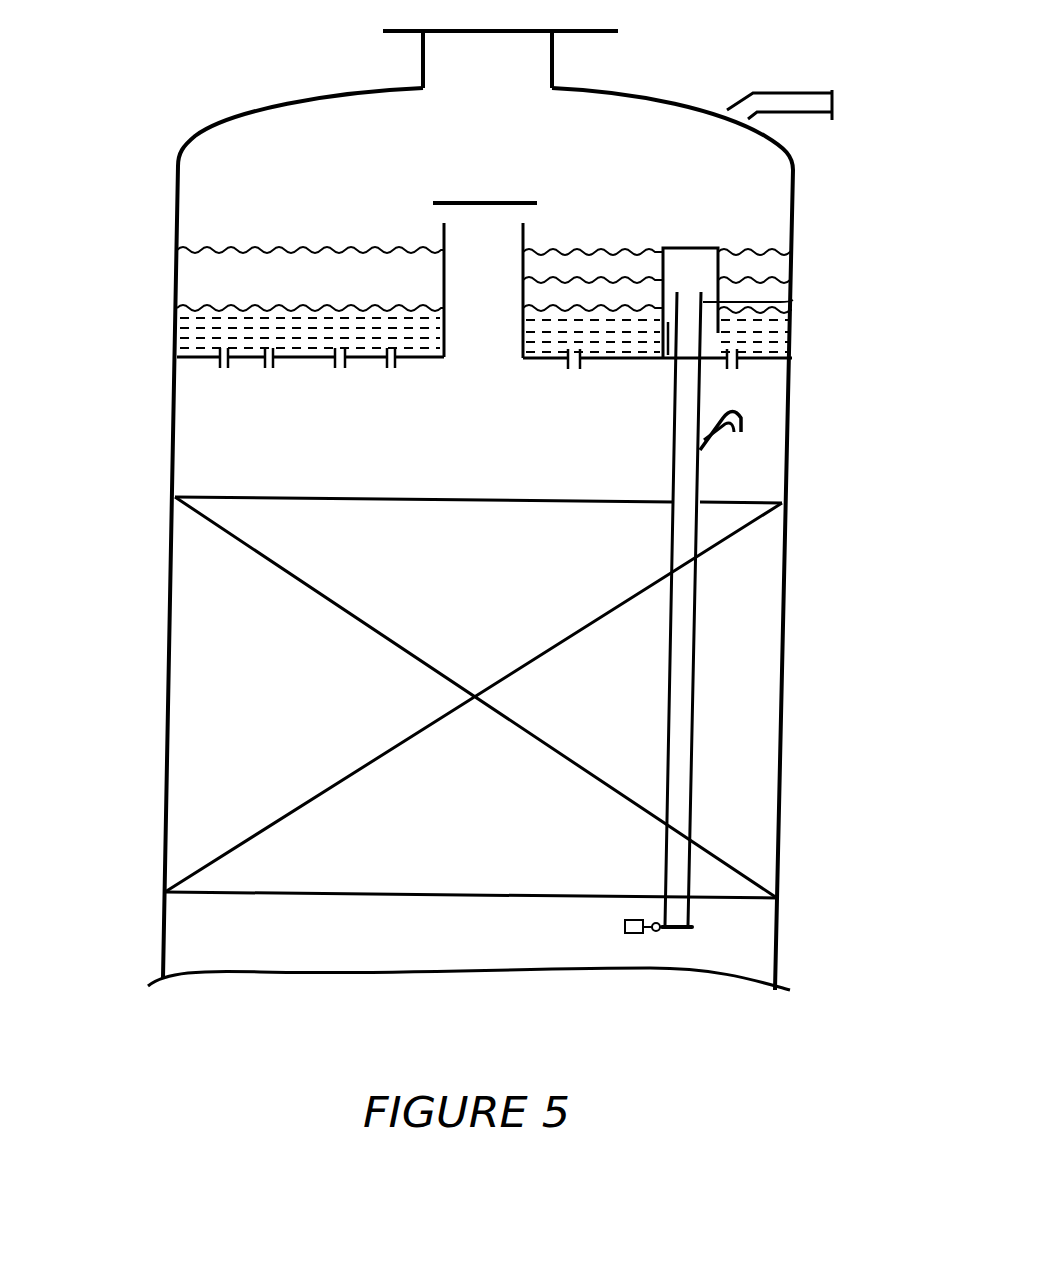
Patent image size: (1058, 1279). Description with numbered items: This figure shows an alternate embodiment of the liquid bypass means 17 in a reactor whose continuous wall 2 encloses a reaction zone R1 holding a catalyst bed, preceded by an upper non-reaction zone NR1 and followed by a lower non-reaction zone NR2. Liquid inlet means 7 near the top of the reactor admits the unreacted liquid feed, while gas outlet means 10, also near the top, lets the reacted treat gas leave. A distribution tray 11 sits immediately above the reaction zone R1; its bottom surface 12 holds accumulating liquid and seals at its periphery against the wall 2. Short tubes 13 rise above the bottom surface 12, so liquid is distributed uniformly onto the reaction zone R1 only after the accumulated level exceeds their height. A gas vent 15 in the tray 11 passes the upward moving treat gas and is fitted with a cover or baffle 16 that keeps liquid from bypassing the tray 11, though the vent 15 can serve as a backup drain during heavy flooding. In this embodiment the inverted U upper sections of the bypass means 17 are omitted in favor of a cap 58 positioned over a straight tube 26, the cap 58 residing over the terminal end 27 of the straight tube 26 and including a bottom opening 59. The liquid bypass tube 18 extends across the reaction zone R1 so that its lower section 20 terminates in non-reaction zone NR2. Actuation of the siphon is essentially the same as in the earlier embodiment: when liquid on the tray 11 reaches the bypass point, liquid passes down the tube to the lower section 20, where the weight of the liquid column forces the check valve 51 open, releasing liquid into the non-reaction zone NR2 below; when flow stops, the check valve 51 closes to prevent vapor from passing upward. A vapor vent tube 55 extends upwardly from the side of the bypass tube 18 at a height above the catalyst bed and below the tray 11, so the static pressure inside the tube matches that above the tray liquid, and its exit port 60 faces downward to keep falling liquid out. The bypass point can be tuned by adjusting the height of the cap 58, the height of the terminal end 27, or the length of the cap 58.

The continuous wall 2 is at (795, 195).
The liquid inlet means 7 is at (566, 72).
The gas outlet means 10 is at (793, 93).
The distribution tray 11 is at (166, 358).
The bottom surface 12 is at (548, 363).
The short tubes 13 is at (387, 366).
The gas vent 15 is at (440, 238).
The cover or baffle 16 is at (477, 203).
The liquid bypass means 17 is at (834, 217).
The liquid bypass tube 18 is at (678, 720).
The lower section 20 is at (673, 885).
The straight tube 26 is at (680, 493).
The terminal end 27 is at (793, 301).
The check valve 51 is at (676, 935).
The vapor vent tube 55 is at (734, 400).
The cap 58 is at (688, 248).
The bottom opening 59 is at (668, 357).
The exit port 60 is at (733, 433).
The reaction zone R1 is at (158, 843).
The non-reaction zone NR1 is at (245, 457).
The non-reaction zone NR2 is at (215, 938).